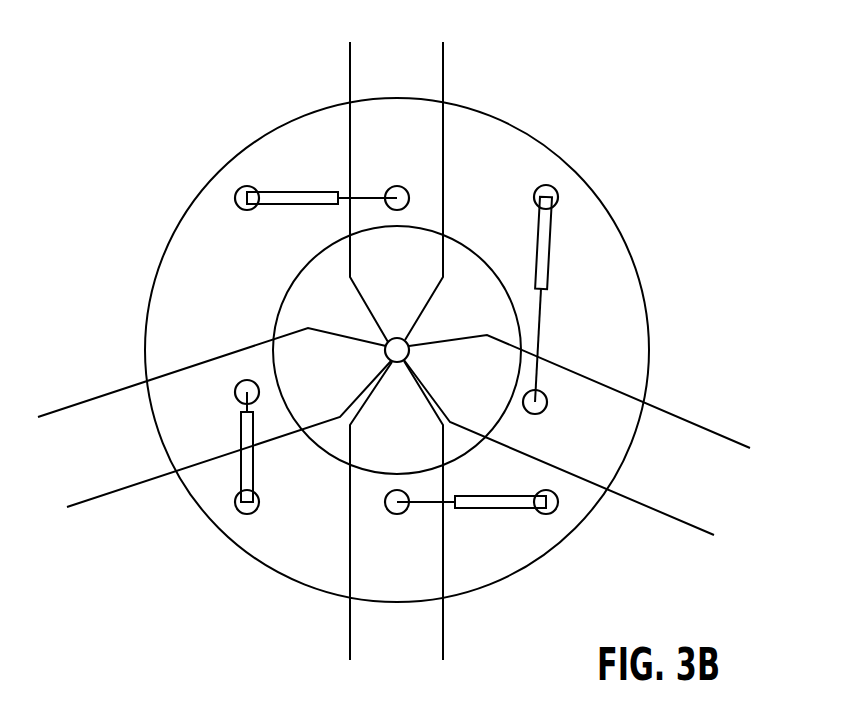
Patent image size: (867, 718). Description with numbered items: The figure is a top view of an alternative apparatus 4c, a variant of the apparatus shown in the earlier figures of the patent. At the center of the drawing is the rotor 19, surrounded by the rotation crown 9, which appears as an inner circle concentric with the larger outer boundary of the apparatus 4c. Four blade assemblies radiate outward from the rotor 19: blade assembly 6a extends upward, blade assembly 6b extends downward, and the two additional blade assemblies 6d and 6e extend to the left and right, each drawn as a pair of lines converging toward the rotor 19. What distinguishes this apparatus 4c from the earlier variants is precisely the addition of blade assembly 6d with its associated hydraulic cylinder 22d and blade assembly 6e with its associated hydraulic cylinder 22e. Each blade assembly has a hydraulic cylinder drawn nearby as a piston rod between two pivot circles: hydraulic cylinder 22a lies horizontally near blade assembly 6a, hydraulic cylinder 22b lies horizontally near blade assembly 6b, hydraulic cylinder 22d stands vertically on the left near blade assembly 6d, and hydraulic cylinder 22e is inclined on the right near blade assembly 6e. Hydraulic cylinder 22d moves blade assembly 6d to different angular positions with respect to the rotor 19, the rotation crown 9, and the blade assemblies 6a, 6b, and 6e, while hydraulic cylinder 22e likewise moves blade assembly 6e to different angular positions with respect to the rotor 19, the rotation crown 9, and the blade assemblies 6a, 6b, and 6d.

The apparatus 4c is at (208, 160).
The rotation crown 9 is at (487, 260).
The rotor 19 is at (372, 328).
The blade assembly 6a is at (322, 45).
The blade assembly 6b is at (337, 620).
The blade assembly 6d is at (96, 512).
The blade assembly 6e is at (730, 418).
The hydraulic cylinder 22a is at (294, 192).
The hydraulic cylinder 22b is at (500, 510).
The hydraulic cylinder 22d is at (242, 462).
The hydraulic cylinder 22e is at (546, 252).